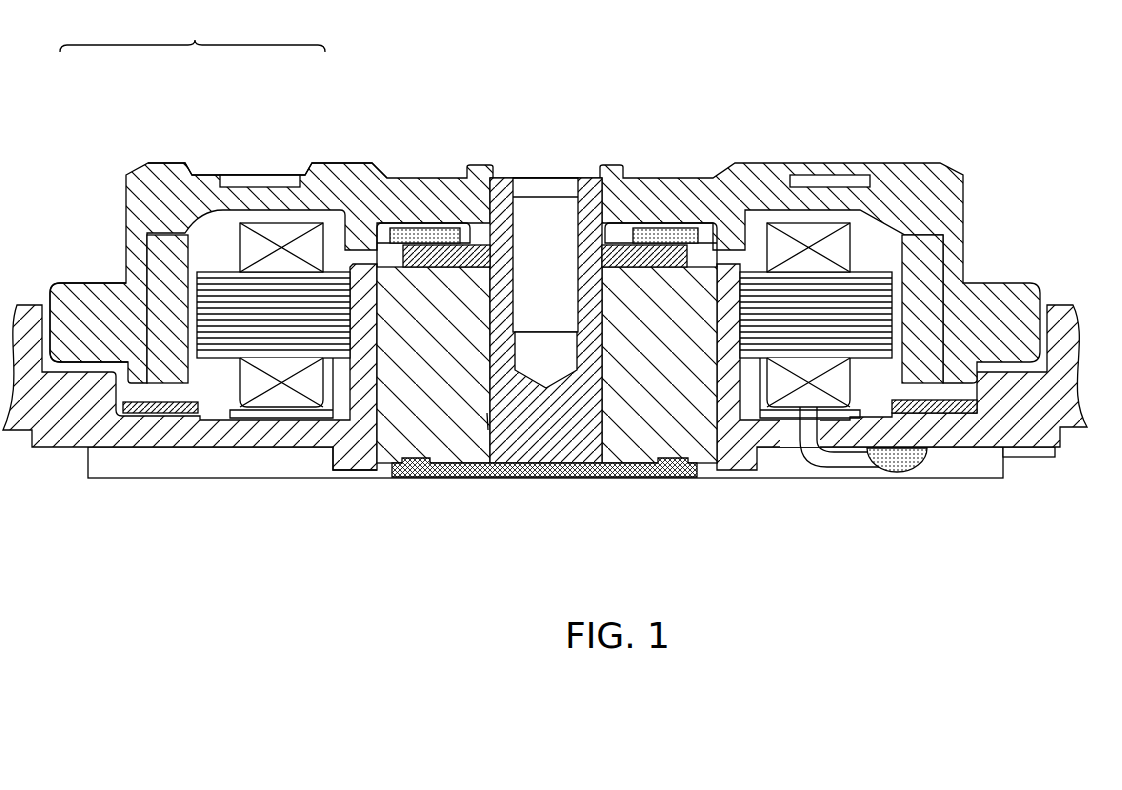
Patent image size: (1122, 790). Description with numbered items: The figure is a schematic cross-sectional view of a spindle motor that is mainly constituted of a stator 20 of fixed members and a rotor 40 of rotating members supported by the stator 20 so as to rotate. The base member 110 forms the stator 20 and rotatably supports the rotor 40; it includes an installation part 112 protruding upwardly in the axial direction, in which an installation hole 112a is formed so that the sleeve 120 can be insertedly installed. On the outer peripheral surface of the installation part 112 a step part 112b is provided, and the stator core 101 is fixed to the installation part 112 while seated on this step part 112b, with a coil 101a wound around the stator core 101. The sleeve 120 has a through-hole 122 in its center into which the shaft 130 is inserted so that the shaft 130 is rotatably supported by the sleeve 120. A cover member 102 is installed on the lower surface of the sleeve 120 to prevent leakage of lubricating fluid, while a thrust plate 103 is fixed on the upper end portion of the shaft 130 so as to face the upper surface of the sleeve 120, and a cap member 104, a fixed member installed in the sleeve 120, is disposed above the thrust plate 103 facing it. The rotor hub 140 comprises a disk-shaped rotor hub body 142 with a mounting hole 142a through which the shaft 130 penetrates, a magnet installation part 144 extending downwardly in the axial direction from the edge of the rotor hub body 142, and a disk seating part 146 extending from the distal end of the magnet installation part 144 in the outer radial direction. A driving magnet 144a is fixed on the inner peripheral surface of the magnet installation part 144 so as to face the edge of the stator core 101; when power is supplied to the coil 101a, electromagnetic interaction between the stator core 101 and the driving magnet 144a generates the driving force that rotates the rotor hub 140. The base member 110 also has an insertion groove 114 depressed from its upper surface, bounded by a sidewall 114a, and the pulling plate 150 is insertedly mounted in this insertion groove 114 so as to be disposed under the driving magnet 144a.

The stator 20 is at (1058, 460).
The rotor 40 is at (965, 148).
The stator core 101 is at (210, 347).
The coil 101a is at (320, 403).
The cover member 102 is at (606, 440).
The thrust plate 103 is at (628, 247).
The cap member 104 is at (707, 243).
The base member 110 is at (208, 430).
The installation part 112 is at (728, 398).
The installation hole 112a is at (388, 410).
The step part 112b is at (767, 357).
The insertion groove 114 is at (870, 397).
The sidewall 114a is at (967, 390).
The sleeve 120 is at (442, 417).
The through-hole 122 is at (487, 413).
The shaft 130 is at (572, 440).
The rotor hub 140 is at (192, 33).
The rotor hub body 142 is at (320, 190).
The mounting hole 142a is at (518, 207).
The magnet installation part 144 is at (137, 250).
The driving magnet 144a is at (937, 265).
The disk seating part 146 is at (83, 293).
The pulling plate 150 is at (157, 403).